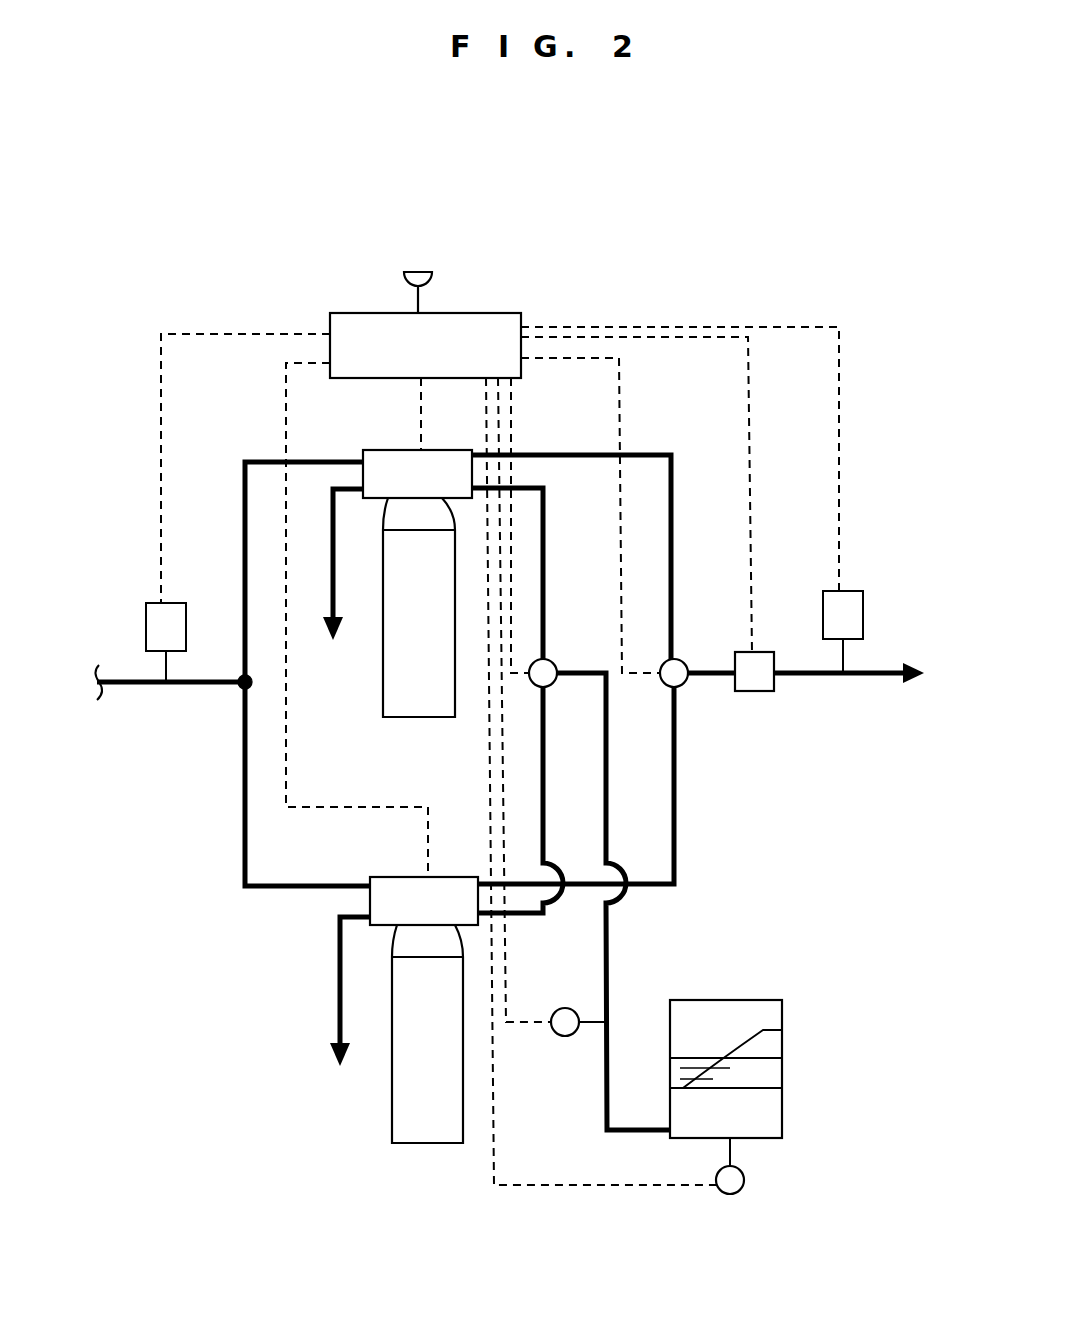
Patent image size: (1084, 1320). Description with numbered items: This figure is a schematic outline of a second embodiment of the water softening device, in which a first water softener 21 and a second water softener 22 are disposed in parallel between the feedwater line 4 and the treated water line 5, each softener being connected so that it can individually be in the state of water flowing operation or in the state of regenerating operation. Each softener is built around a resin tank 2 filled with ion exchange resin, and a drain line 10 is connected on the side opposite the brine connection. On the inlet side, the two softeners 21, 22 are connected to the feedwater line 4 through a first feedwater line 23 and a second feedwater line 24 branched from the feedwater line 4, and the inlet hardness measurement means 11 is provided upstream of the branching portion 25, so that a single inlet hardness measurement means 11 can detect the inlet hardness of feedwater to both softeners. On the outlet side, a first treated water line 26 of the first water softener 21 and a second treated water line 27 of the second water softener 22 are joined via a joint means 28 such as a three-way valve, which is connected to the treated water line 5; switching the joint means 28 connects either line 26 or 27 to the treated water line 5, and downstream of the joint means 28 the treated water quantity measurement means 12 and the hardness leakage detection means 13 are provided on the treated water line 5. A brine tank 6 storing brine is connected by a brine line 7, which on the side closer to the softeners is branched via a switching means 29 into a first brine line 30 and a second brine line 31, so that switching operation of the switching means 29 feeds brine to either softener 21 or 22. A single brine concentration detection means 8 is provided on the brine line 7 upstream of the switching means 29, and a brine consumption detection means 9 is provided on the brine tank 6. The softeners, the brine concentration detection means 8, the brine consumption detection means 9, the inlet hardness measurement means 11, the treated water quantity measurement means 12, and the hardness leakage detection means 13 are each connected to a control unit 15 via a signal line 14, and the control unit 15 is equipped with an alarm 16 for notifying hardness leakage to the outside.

The resin tank 2 is at (411, 710).
The feedwater line 4 is at (128, 686).
The treated water line 5 is at (818, 677).
The brine tank 6 is at (770, 1118).
The brine line 7 is at (608, 948).
The brine concentration detection means 8 is at (567, 1036).
The brine consumption detection means 9 is at (745, 1180).
The drain line 10 is at (333, 562).
The inlet hardness measurement means 11 is at (155, 622).
The treated water quantity measurement means 12 is at (757, 680).
The hardness leakage detection means 13 is at (853, 613).
The signal line 14 is at (217, 334).
The control unit 15 is at (497, 323).
The alarm 16 is at (432, 278).
The first water softener 21 is at (403, 442).
The second water softener 22 is at (408, 869).
The first feedwater line 23 is at (245, 545).
The second feedwater line 24 is at (246, 822).
The branching portion 25 is at (237, 690).
The first treated water line 26 is at (671, 497).
The second treated water line 27 is at (674, 828).
The joint means 28 is at (680, 668).
The switching means 29 is at (550, 668).
The first brine line 30 is at (543, 562).
The second brine line 31 is at (543, 797).